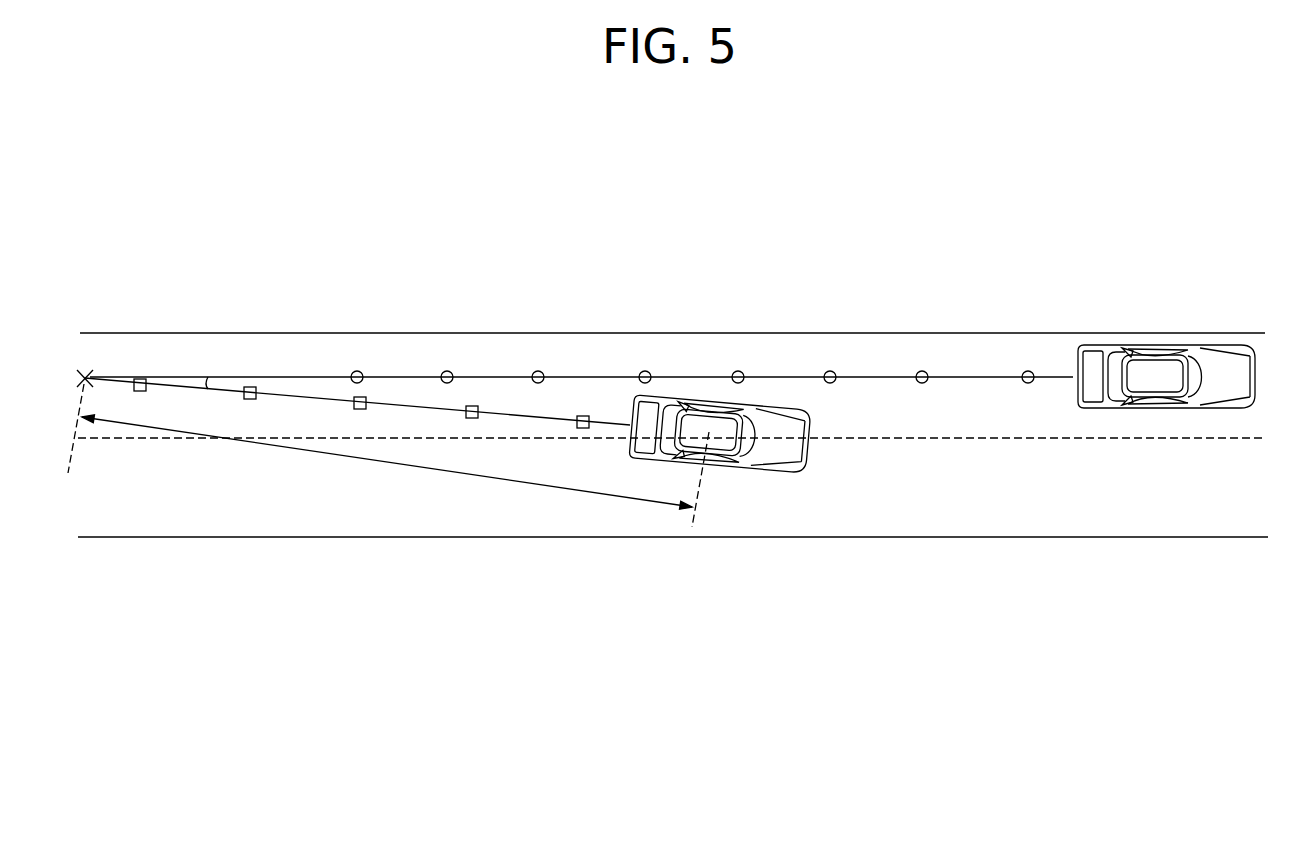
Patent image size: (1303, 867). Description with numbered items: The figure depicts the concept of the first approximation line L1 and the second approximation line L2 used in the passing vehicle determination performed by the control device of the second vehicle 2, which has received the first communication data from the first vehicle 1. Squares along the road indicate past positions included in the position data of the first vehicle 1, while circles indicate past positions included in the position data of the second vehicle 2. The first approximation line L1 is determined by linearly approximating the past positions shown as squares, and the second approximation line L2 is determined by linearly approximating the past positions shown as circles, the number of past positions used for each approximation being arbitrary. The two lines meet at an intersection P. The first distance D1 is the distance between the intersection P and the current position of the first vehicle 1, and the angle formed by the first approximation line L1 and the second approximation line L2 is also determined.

The first vehicle 1 is at (725, 402).
The second vehicle 2 is at (1156, 350).
The intersection P is at (80, 407).
The first approximation line L1 is at (403, 405).
The second approximation line L2 is at (483, 377).
The first distance D1 is at (387, 462).